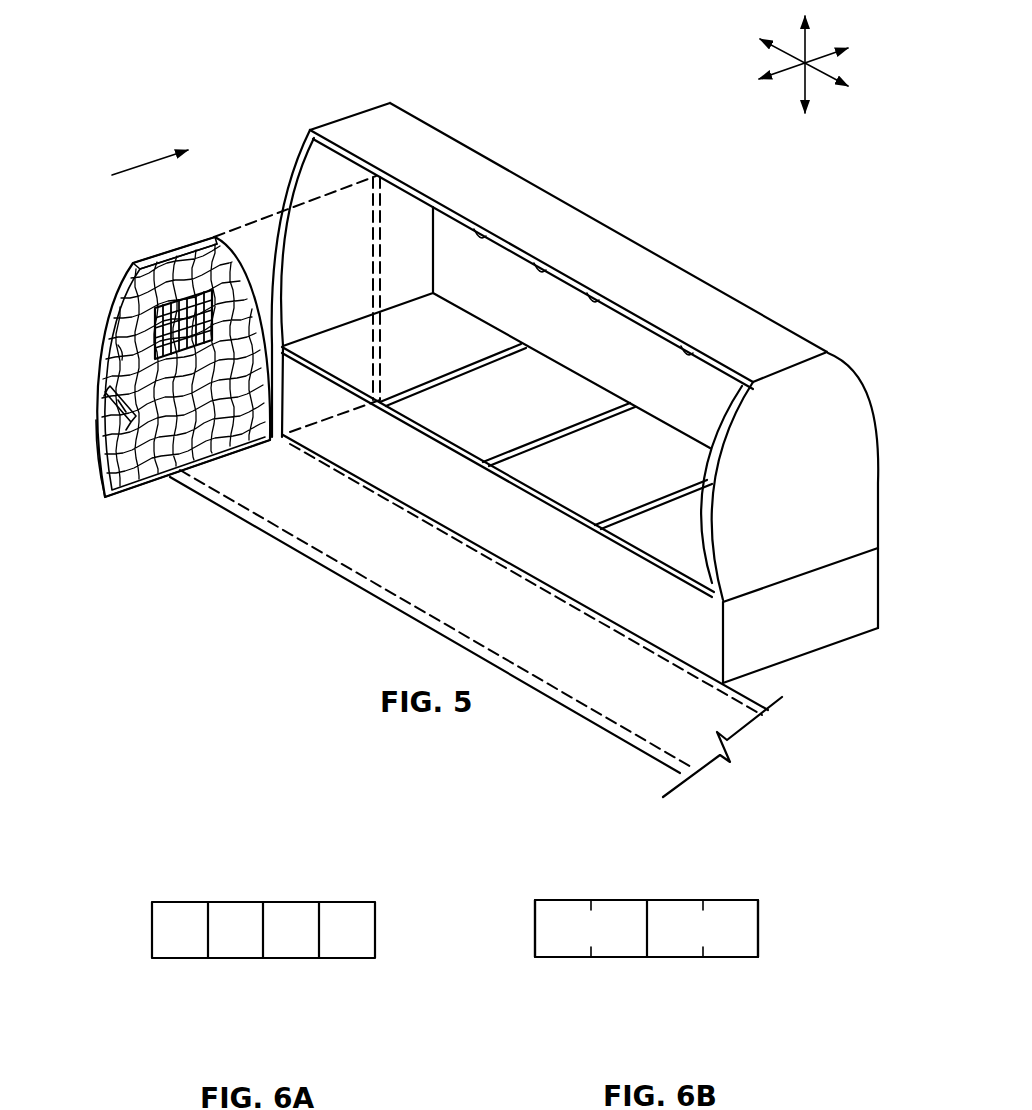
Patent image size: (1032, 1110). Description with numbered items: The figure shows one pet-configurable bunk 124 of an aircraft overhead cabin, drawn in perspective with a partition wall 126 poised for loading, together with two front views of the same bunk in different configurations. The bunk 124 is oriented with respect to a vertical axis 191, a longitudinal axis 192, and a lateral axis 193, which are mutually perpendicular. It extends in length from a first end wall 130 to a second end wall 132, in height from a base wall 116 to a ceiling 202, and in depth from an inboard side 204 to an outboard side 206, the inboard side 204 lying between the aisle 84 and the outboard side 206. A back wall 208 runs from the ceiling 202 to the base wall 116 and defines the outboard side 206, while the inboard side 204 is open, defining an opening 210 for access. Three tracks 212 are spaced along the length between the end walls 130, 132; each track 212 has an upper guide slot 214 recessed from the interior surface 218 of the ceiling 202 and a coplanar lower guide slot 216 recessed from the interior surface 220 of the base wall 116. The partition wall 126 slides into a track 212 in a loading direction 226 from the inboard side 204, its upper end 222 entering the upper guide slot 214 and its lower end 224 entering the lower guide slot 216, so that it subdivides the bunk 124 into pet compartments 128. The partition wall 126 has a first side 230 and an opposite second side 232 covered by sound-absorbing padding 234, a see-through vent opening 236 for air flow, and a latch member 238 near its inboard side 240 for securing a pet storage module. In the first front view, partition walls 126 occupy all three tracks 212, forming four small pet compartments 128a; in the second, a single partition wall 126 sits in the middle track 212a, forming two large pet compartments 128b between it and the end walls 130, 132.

In FIG. 5, the aisle 84 is at (641, 709).
In FIG. 5, the base wall 116 is at (655, 563).
In FIG. 5, the pet-configurable bunk 124 is at (453, 118).
In FIG. 6A, the pet-configurable bunk 124 is at (215, 860).
In FIG. 6B, the pet-configurable bunk 124 is at (588, 883).
In FIG. 5, the partition wall 126 is at (100, 353).
In FIG. 6A, the partition wall 126 is at (207, 917).
In FIG. 6B, the partition wall 126 is at (645, 917).
In FIG. 6A, the pet compartments 128 is at (172, 917).
In FIG. 6B, the pet compartments 128 is at (567, 922).
In FIG. 6A, the small pet compartments 128a is at (343, 912).
In FIG. 6B, the large pet compartments 128b is at (728, 913).
In FIG. 5, the first end wall 130 is at (720, 413).
In FIG. 6B, the first end wall 130 is at (758, 930).
In FIG. 5, the second end wall 132 is at (297, 147).
In FIG. 6B, the second end wall 132 is at (535, 927).
In FIG. 5, the vertical axis 191 is at (825, 15).
In FIG. 5, the longitudinal axis 192 is at (828, 80).
In FIG. 5, the lateral axis 193 is at (832, 50).
In FIG. 5, the ceiling 202 is at (683, 347).
In FIG. 5, the inboard side 204 is at (707, 553).
In FIG. 5, the outboard side 206 is at (882, 478).
In FIG. 5, the back wall 208 is at (648, 360).
In FIG. 5, the opening 210 is at (310, 282).
In FIG. 5, the tracks 212 is at (370, 217).
In FIG. 6A, the tracks 212 is at (208, 963).
In FIG. 6B, the tracks 212 is at (592, 968).
In FIG. 6B, the middle track 212a is at (648, 898).
In FIG. 5, the upper guide slot 214 is at (378, 168).
In FIG. 5, the lower guide slot 216 is at (449, 360).
In FIG. 5, the interior surface of the ceiling 218 is at (543, 393).
In FIG. 5, the interior surface of the base wall 220 is at (570, 298).
In FIG. 5, the upper end 222 is at (143, 260).
In FIG. 5, the lower end 224 is at (130, 520).
In FIG. 5, the loading direction 226 is at (150, 163).
In FIG. 5, the first side 230 is at (183, 257).
In FIG. 5, the second side 232 is at (163, 249).
In FIG. 5, the sound-absorbing padding 234 is at (127, 347).
In FIG. 5, the vent opening 236 is at (205, 298).
In FIG. 5, the latch member 238 is at (120, 410).
In FIG. 5, the inboard side of the partition wall 240 is at (97, 460).